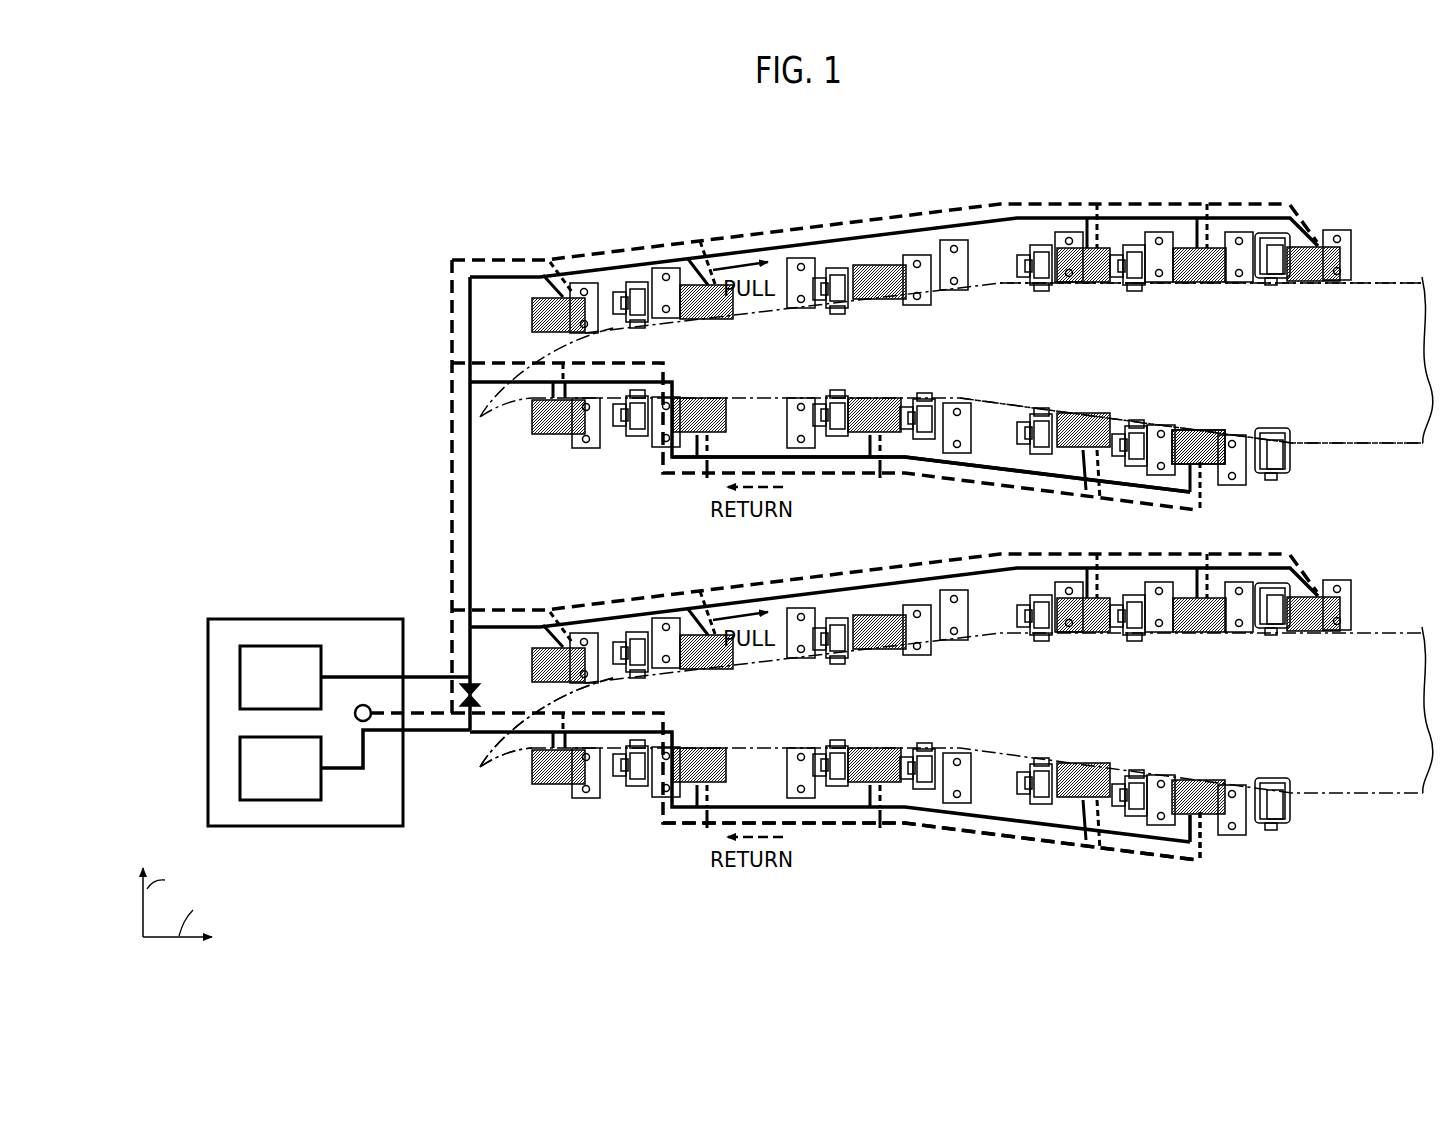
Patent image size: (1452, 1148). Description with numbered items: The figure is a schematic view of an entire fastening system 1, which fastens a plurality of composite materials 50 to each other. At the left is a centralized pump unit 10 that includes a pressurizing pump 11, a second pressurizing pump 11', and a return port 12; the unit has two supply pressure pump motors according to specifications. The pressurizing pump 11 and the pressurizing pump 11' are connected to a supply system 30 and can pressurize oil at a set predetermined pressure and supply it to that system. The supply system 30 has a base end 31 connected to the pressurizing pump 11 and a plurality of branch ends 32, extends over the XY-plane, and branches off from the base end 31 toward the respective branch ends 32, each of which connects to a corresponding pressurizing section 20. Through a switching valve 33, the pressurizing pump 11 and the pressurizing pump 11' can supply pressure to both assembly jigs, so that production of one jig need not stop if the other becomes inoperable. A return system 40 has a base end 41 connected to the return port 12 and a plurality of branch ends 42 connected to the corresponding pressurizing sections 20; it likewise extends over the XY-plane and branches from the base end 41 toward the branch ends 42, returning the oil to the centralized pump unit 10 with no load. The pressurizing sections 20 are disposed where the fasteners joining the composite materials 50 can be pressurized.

The fastening system 1 is at (1306, 158).
The centralized pump unit 10 is at (282, 607).
The pressurizing pump 11 is at (240, 768).
The pressurizing pump 11' is at (240, 677).
The return port 12 is at (363, 704).
The pressurizing section 20 is at (1206, 418).
The supply system 30 is at (985, 450).
The base end 31 is at (420, 734).
The branch end 32 is at (1196, 850).
The switching valve 33 is at (541, 713).
The return system 40 is at (979, 846).
The base end 41 is at (420, 710).
The branch end 42 is at (1204, 840).
The composite material 50 is at (1358, 422).